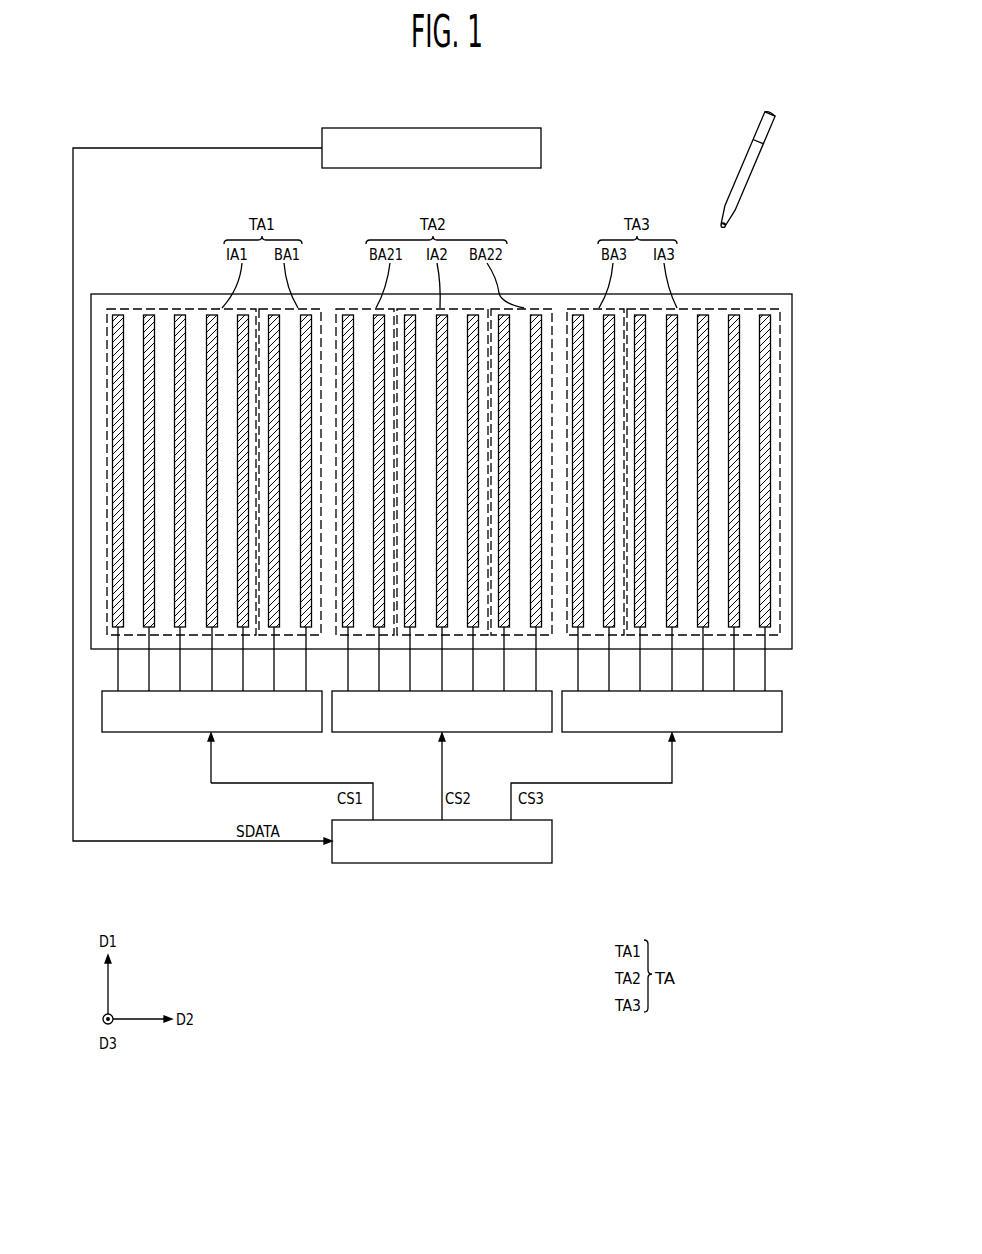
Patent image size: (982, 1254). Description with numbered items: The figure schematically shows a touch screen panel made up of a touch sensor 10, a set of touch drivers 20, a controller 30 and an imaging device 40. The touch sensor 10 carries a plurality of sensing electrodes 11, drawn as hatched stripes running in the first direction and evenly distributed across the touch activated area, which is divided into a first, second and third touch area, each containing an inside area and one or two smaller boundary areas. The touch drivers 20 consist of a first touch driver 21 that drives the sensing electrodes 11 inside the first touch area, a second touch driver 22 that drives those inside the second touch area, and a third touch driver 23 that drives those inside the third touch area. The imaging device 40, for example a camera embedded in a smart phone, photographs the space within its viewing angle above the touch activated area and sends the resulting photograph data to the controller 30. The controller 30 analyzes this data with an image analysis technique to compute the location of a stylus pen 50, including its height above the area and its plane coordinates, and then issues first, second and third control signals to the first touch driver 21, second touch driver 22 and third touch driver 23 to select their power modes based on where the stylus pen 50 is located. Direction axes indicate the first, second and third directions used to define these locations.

The touch sensor 10 is at (467, 492).
The sensing electrodes 11 is at (771, 430).
The touch drivers 20 is at (442, 894).
The first touch driver 21 is at (137, 733).
The second touch driver 22 is at (408, 733).
The third touch driver 23 is at (714, 733).
The controller 30 is at (490, 864).
The imaging device 40 is at (541, 148).
The stylus pen 50 is at (751, 178).